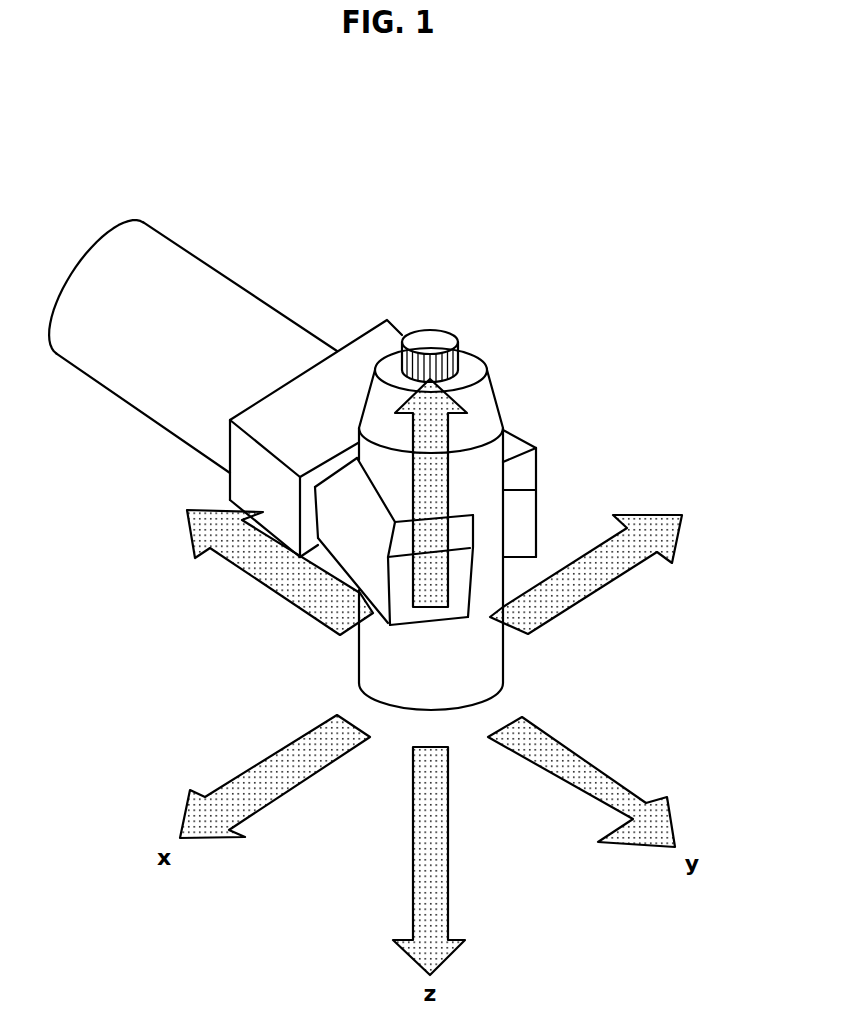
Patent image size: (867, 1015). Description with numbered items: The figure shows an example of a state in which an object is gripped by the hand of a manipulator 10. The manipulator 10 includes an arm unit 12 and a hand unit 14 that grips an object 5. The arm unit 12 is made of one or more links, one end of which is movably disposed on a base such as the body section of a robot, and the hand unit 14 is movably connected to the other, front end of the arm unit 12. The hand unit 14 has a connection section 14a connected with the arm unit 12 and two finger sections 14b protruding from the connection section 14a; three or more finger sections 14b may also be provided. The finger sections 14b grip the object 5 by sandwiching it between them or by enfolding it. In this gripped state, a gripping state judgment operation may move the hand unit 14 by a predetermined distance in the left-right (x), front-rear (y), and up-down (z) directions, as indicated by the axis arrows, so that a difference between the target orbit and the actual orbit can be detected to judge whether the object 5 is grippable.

The manipulator 10 is at (119, 463).
The arm unit 12 is at (247, 280).
The hand unit 14 is at (571, 352).
The object 5 is at (475, 347).
The connection section 14a is at (362, 327).
The finger sections 14b is at (538, 467).